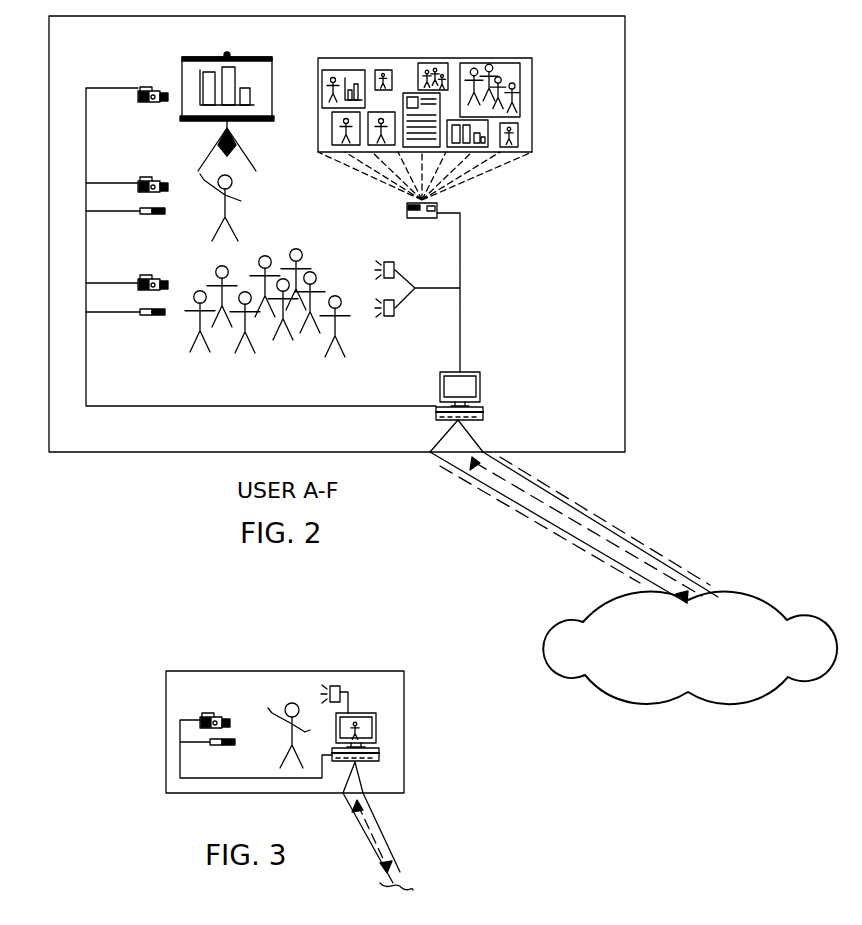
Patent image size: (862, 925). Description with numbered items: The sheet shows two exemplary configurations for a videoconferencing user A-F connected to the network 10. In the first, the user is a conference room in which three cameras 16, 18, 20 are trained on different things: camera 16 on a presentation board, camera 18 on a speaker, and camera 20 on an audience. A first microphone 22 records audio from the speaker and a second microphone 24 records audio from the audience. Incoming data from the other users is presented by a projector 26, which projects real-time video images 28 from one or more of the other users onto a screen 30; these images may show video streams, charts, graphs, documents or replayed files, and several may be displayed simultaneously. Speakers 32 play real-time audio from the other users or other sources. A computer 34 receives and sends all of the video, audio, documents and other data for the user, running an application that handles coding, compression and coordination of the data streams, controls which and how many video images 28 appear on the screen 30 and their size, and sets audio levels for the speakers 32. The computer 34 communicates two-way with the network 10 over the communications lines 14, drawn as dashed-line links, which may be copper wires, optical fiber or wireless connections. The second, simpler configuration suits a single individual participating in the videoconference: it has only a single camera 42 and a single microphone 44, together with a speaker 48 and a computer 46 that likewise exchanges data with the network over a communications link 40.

In FIG. 2, the network 10 is at (743, 612).
In FIG. 2, the communications lines 14 is at (580, 500).
In FIG. 2, the camera 16 is at (137, 87).
In FIG. 2, the camera 18 is at (138, 180).
In FIG. 2, the camera 20 is at (138, 278).
In FIG. 2, the first microphone 22 is at (140, 210).
In FIG. 2, the second microphone 24 is at (140, 312).
In FIG. 2, the projector 26 is at (435, 218).
In FIG. 2, the video images 28 is at (382, 70).
In FIG. 2, the screen 30 is at (447, 84).
In FIG. 2, the speakers 32 is at (389, 262).
In FIG. 2, the computer 34 is at (483, 413).
In FIG. 3, the communication link 40 is at (390, 832).
In FIG. 3, the camera 42 is at (218, 716).
In FIG. 3, the microphone 44 is at (215, 742).
In FIG. 3, the computer 46 is at (376, 736).
In FIG. 3, the speaker 48 is at (334, 686).